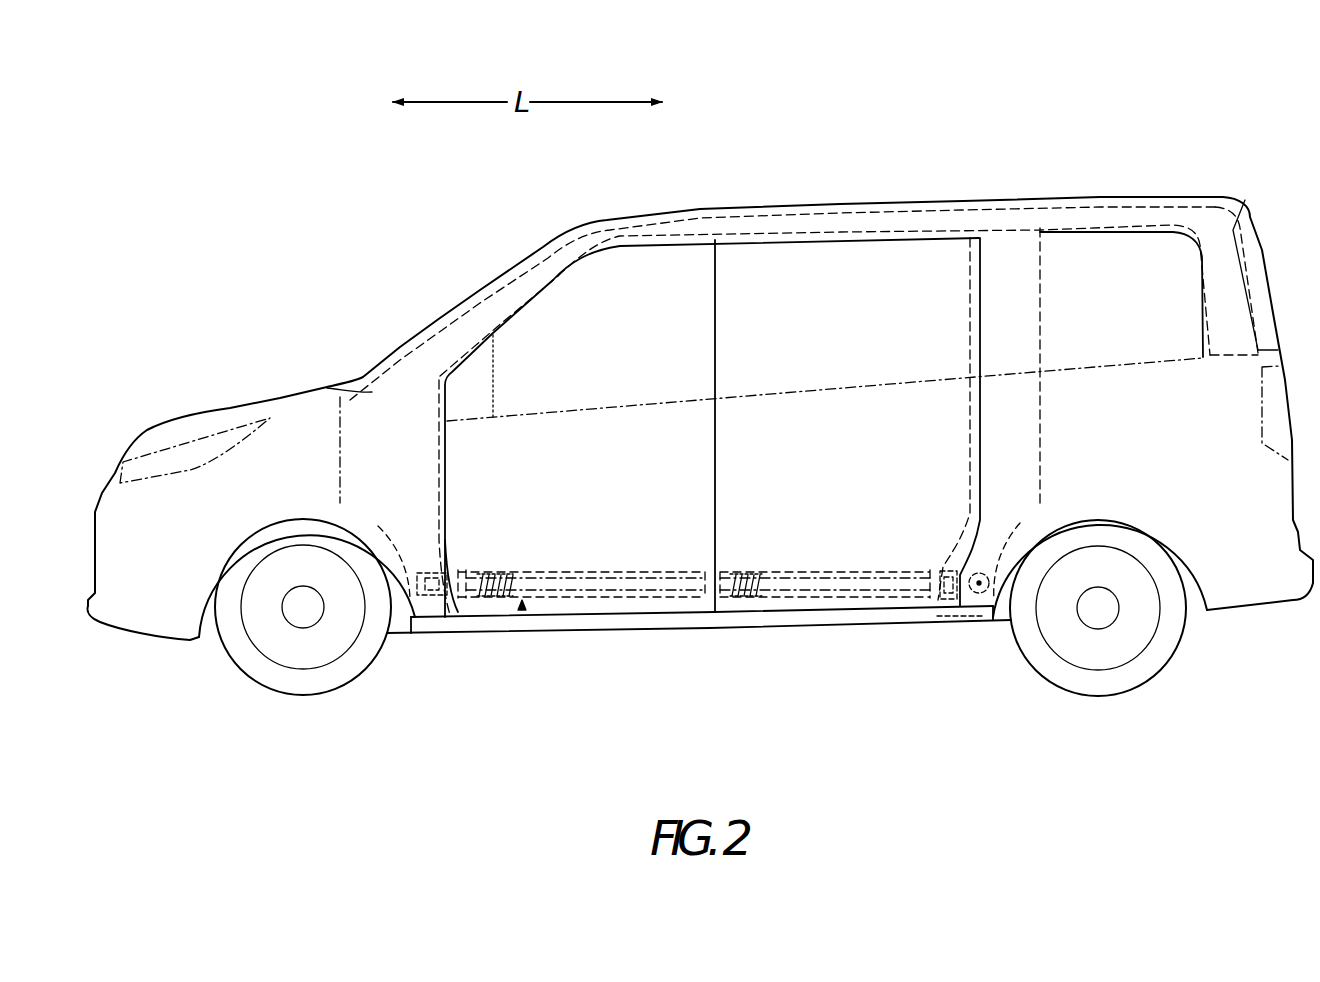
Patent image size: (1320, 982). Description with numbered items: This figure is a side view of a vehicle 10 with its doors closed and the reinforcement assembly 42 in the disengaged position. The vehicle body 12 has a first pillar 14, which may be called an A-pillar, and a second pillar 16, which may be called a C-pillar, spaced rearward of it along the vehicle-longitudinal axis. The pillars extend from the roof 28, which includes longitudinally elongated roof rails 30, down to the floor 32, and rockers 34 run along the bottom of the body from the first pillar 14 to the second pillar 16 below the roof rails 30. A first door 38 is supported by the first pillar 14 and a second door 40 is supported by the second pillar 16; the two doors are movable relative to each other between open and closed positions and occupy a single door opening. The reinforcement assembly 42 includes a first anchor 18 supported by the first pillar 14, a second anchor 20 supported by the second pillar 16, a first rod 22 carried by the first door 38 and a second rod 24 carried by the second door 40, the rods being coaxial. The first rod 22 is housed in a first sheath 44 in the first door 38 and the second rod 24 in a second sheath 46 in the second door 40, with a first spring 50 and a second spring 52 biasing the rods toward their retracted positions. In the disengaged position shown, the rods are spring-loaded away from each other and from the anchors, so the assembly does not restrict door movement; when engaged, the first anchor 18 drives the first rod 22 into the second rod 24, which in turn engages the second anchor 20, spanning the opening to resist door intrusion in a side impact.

The vehicle 10 is at (224, 140).
The vehicle body 12 is at (190, 418).
The first pillar 14 is at (377, 527).
The second pillar 16 is at (1047, 462).
The first anchor 18 is at (427, 613).
The second anchor 20 is at (982, 613).
The first rod 22 is at (613, 600).
The second rod 24 is at (868, 600).
The roof 28 is at (963, 202).
The roof rails 30 is at (773, 207).
The floor 32 is at (643, 613).
The rockers 34 is at (693, 628).
The first door 38 is at (440, 442).
The second door 40 is at (980, 418).
The reinforcement assembly 42 is at (520, 611).
The first sheath 44 is at (563, 600).
The second sheath 46 is at (813, 600).
The first spring 50 is at (483, 600).
The second spring 52 is at (748, 600).